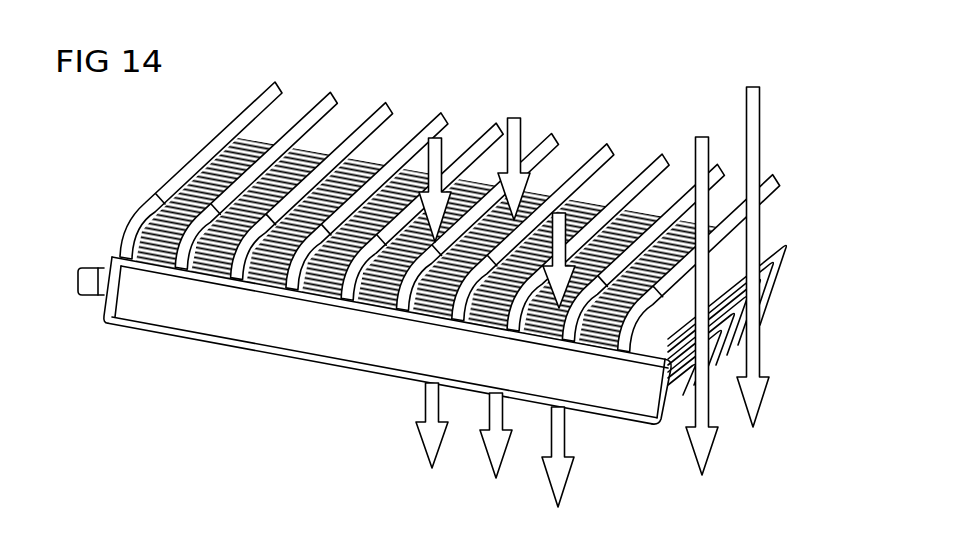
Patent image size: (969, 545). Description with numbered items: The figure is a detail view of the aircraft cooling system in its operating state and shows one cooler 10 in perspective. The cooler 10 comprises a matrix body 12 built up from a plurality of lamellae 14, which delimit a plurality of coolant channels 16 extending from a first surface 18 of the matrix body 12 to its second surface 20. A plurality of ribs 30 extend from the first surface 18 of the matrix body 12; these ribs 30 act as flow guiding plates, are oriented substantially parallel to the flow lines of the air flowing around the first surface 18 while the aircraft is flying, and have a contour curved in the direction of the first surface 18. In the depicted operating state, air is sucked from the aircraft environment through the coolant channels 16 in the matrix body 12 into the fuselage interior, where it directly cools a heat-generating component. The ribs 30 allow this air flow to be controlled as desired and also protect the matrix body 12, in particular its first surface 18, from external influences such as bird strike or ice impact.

The cooler 10 is at (122, 271).
The matrix body 12 is at (786, 274).
The lamellae 14 is at (770, 236).
The coolant channels 16 is at (612, 330).
The first surface of the matrix body 18 is at (312, 150).
The second surface of the matrix body 20 is at (298, 363).
The ribs 30 is at (610, 147).